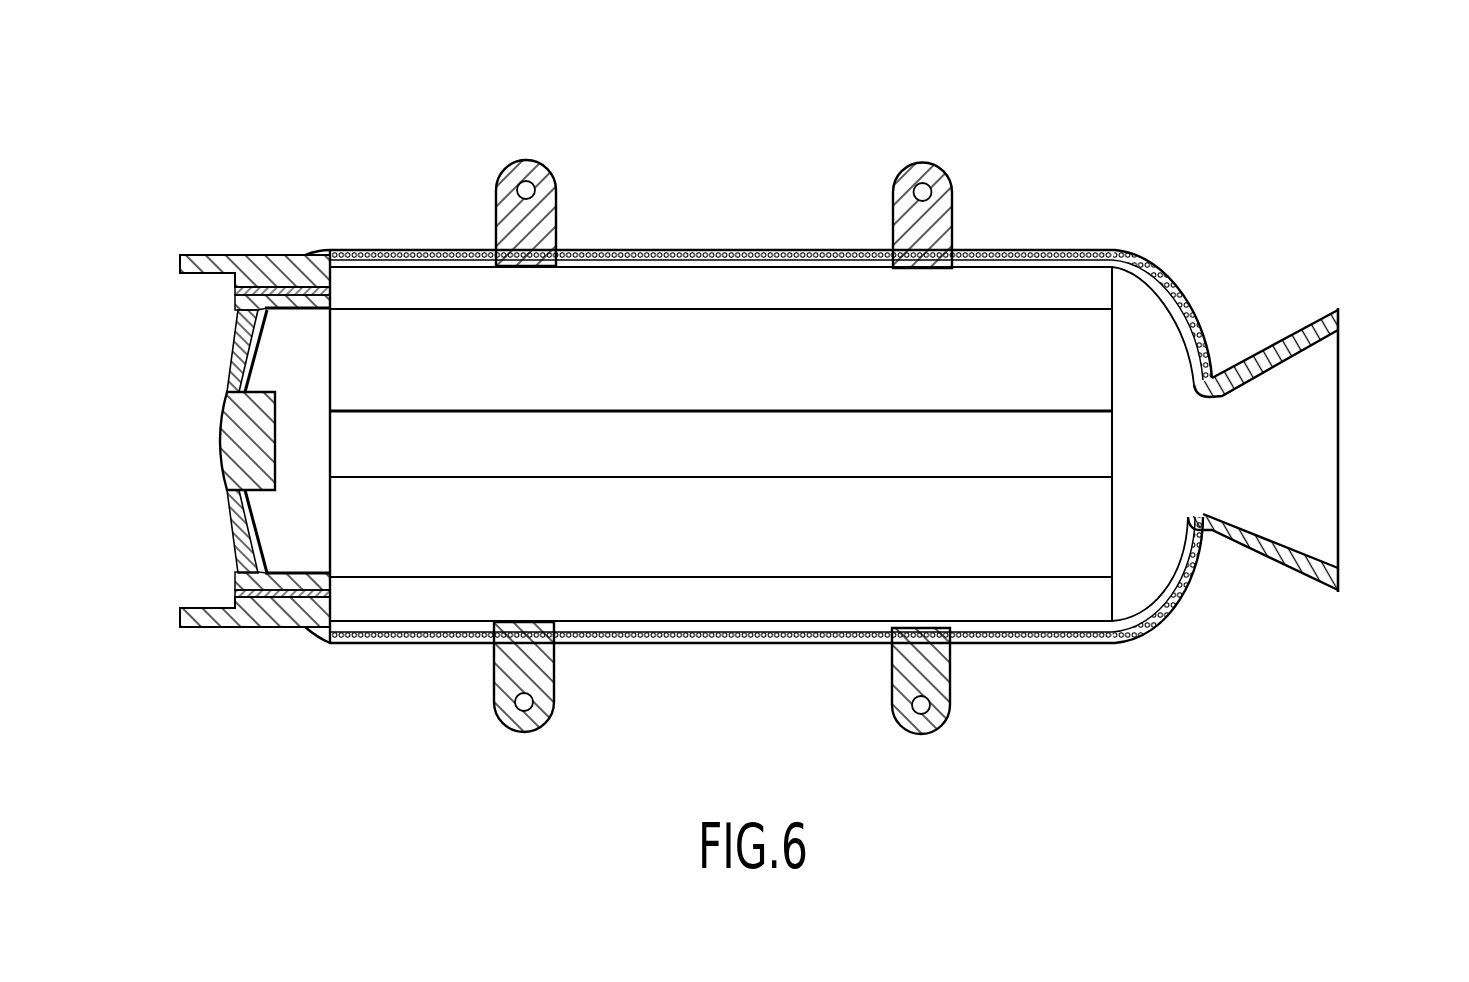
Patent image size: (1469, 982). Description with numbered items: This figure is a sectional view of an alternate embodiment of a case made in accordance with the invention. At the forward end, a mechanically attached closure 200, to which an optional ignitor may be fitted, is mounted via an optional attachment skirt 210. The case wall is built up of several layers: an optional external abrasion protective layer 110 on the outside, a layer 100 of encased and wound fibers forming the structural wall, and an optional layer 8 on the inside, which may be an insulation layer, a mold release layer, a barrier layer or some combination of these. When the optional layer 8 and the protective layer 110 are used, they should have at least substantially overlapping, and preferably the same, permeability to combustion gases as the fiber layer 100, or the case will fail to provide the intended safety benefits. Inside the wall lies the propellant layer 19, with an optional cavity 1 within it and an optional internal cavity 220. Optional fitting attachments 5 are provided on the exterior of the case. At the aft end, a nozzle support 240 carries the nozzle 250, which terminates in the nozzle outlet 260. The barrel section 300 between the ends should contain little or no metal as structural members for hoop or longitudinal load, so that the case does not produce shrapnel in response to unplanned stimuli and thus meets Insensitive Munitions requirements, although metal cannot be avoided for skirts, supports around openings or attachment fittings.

The barrel section 300 is at (1130, 128).
The cavity 1 is at (1070, 478).
The propellant layer 19 is at (580, 575).
The layer of encased and wound fibers 100 is at (722, 252).
The external abrasion protective layer 110 is at (615, 248).
The layer 8 is at (1032, 268).
The internal cavity 220 is at (720, 630).
The nozzle support 240 is at (1213, 380).
The nozzle 250 is at (1300, 580).
The nozzle outlet 260 is at (1340, 352).
The fitting attachments 5 is at (940, 228).
The attachment skirt 210 is at (270, 263).
The closure 200 is at (237, 442).